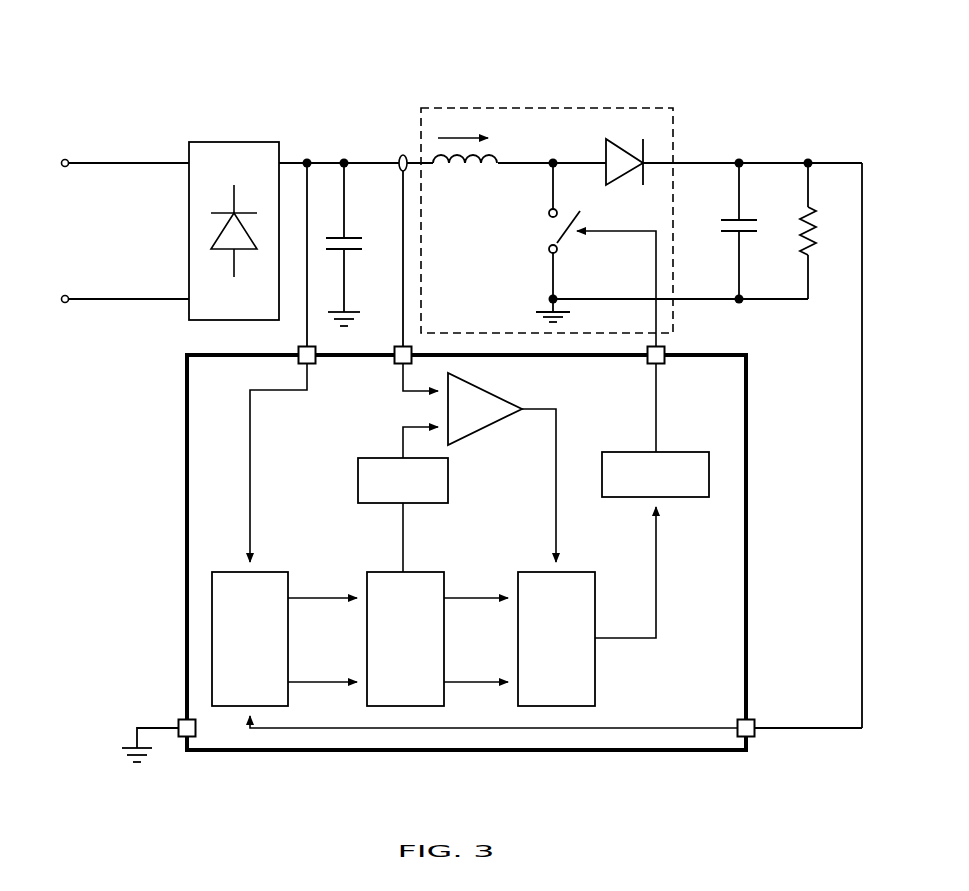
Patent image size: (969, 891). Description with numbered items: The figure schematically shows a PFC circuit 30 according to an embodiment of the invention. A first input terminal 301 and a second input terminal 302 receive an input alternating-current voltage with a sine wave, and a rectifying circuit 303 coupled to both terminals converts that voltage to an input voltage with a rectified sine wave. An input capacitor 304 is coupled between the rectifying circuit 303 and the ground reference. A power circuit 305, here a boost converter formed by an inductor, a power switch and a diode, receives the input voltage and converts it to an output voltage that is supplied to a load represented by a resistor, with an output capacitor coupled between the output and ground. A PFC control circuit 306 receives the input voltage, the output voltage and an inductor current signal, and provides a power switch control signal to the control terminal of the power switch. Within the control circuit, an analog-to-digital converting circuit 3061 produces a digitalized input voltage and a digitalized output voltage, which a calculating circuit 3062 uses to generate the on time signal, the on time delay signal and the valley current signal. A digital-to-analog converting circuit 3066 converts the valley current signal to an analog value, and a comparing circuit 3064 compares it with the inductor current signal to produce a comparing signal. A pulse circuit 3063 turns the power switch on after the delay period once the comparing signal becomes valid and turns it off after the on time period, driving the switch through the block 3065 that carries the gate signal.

The PFC circuit 30 is at (426, 66).
The first input terminal 301 is at (113, 156).
The second input terminal 302 is at (115, 310).
The rectifying circuit 303 is at (189, 149).
The input capacitor 304 is at (354, 244).
The power circuit 305 is at (675, 142).
The PFC control circuit 306 is at (185, 630).
The analog-to-digital converting circuit 3061 is at (250, 639).
The calculating circuit 3062 is at (405, 639).
The pulse circuit 3063 is at (556, 639).
The comparing circuit 3064 is at (490, 394).
The driver 3065 is at (655, 474).
The digital-to-analog converting circuit 3066 is at (403, 480).